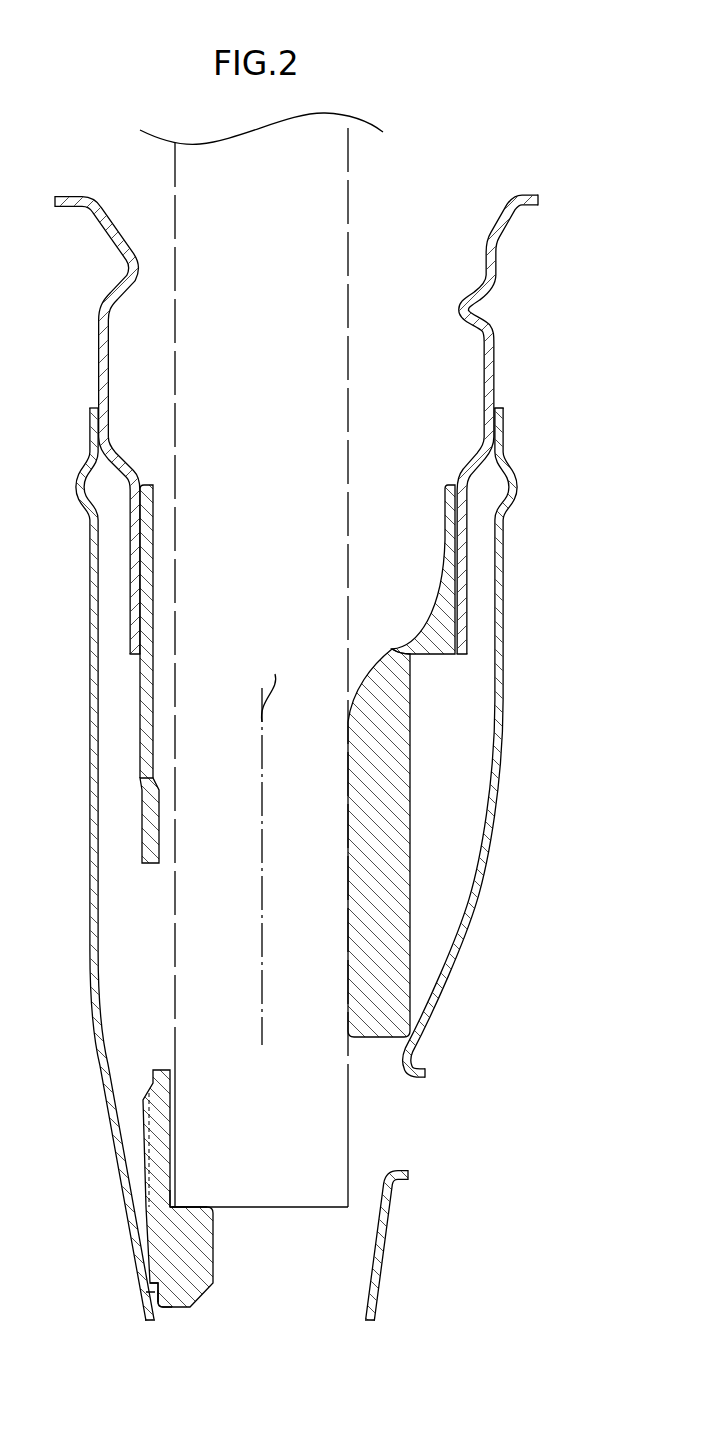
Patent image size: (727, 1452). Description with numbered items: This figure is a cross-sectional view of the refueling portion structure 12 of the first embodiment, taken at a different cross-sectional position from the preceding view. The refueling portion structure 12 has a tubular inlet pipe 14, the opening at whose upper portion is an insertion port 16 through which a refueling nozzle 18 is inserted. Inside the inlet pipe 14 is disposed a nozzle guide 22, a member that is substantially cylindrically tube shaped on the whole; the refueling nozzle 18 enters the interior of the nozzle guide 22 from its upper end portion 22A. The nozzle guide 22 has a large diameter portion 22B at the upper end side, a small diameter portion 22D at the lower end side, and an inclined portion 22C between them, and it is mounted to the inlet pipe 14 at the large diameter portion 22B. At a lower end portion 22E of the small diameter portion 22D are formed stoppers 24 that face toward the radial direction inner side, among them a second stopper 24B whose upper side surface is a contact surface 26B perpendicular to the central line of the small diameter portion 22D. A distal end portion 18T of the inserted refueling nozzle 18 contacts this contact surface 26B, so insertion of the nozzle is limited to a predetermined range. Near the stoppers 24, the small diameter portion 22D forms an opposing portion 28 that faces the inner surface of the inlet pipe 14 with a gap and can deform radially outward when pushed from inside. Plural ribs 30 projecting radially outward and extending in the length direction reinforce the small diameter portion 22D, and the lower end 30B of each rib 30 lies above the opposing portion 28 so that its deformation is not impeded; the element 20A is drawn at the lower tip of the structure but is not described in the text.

The refueling portion structure 12 is at (537, 115).
The inlet pipe 14 is at (103, 1060).
The insertion port 16 is at (100, 228).
The refueling nozzle 18 is at (348, 170).
The distal end portion 18T is at (313, 1212).
The tip end of housing 20A is at (145, 1296).
The nozzle guide 22 is at (140, 756).
The upper end portion 22A is at (143, 484).
The large diameter portion 22B is at (444, 527).
The inclined portion 22C is at (393, 662).
The small diameter portion 22D is at (150, 840).
The lower end portion 22E is at (162, 1215).
The stopper 24 is at (214, 1255).
The second stopper 24B is at (207, 1238).
The contact surface 26B is at (198, 1207).
The opposing portion 28 is at (160, 1306).
The rib 30 is at (145, 1137).
The lower end 30B is at (145, 1258).